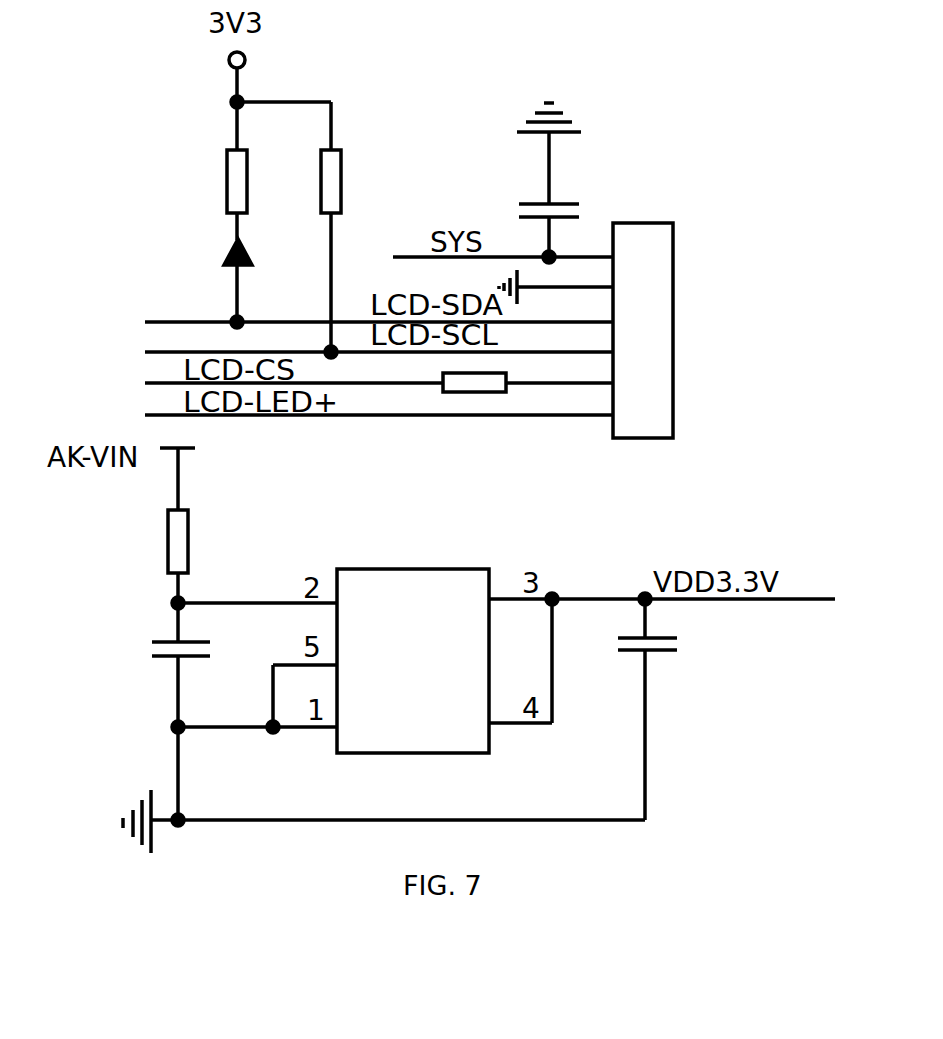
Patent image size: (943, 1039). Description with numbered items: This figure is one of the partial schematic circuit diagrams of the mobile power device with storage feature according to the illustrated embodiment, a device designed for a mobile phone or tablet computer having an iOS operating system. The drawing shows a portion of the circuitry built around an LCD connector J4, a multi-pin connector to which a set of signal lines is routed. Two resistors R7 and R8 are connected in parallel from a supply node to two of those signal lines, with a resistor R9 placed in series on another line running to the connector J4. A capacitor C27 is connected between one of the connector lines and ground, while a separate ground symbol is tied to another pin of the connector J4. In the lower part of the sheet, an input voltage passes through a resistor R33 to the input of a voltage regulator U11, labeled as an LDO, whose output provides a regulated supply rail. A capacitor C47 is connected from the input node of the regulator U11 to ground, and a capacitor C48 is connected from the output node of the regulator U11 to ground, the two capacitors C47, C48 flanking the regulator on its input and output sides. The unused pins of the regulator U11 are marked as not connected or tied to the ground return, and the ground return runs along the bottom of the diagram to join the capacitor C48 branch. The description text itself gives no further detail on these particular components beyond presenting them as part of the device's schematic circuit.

The pull-up resistor 10K R7 is at (267, 212).
The pull-up resistor 10K R8 is at (362, 227).
The series resistor 10K R9 is at (485, 369).
The decoupling capacitor 0.1uF C27 is at (589, 180).
The LCD connector J4 is at (644, 333).
The input resistor 10R R33 is at (210, 554).
The LDO voltage regulator U11 is at (413, 664).
The input capacitor 1uF C47 is at (211, 665).
The output capacitor 1uF C48 is at (678, 709).